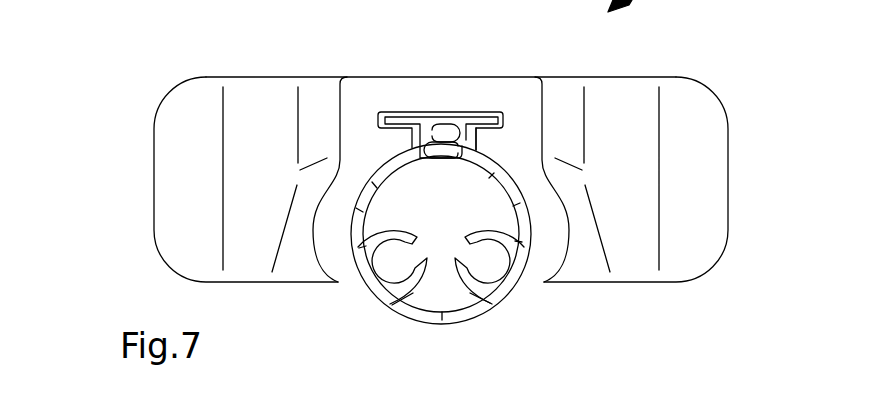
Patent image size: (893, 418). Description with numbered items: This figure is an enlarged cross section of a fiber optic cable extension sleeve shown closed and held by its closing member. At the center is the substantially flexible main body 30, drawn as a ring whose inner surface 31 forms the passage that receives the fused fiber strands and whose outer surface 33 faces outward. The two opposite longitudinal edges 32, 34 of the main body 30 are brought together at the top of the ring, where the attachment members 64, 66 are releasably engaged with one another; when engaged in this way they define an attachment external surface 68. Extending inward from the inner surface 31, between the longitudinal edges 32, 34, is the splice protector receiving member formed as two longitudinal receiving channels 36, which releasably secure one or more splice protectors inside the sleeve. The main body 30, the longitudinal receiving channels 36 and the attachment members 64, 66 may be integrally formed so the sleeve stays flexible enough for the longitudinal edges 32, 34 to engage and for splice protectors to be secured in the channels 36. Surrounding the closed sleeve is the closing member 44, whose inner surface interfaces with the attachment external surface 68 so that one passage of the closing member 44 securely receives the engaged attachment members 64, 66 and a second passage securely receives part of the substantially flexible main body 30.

The substantially flexible main body 30 is at (528, 212).
The inner surface 31 is at (373, 197).
The longitudinal edge 32 is at (410, 142).
The outer surface 33 is at (390, 308).
The longitudinal edge 34 is at (477, 138).
The longitudinal receiving channels 36 is at (462, 287).
The closing member 44 is at (130, 165).
The attachment member 64 is at (447, 122).
The attachment member 66 is at (466, 153).
The attachment external surface 68 is at (477, 112).